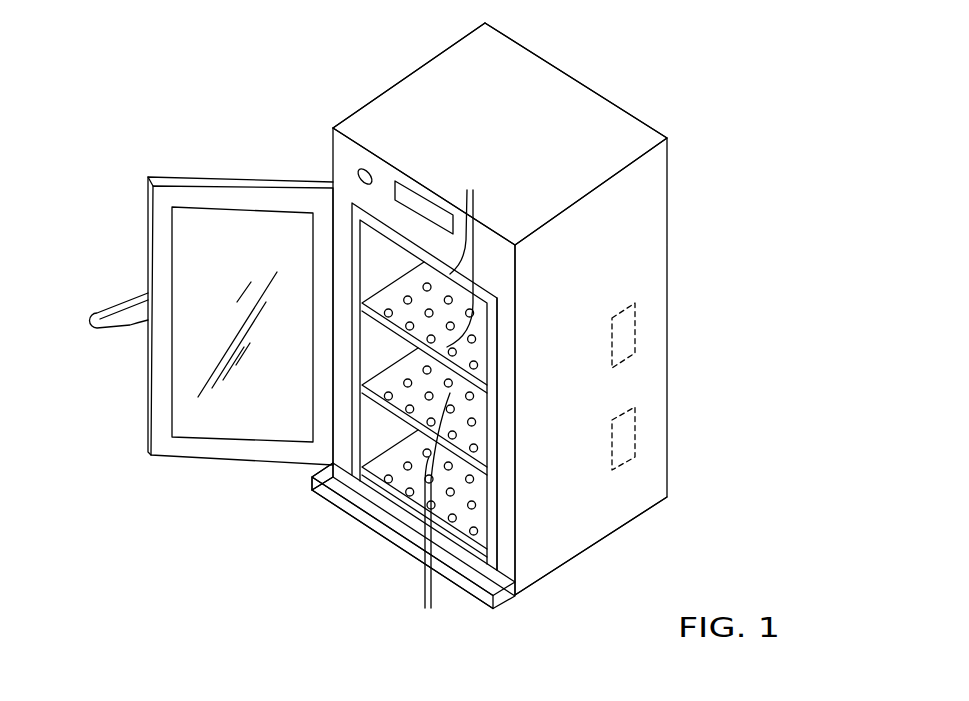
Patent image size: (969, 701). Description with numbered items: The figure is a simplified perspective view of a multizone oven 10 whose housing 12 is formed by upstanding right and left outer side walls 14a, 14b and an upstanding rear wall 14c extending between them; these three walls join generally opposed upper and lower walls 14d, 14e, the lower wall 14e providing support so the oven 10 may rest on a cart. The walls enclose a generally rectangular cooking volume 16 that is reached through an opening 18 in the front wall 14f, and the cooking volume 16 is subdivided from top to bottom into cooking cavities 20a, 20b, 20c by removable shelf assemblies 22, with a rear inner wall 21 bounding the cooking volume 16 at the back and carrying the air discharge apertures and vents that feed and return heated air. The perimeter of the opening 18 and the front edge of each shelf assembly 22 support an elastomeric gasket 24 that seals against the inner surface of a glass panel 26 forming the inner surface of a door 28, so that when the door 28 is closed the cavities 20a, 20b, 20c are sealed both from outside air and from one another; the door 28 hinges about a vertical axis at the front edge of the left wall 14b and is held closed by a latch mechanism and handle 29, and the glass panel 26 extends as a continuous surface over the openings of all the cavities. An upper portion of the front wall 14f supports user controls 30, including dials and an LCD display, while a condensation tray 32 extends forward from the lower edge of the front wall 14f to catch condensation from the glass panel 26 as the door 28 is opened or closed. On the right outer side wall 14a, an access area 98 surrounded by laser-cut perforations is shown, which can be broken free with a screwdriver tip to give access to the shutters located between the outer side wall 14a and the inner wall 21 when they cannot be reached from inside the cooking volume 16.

The multizone oven 10 is at (437, 338).
The housing 12 is at (499, 323).
The right outer side wall 14a is at (630, 366).
The left outer side wall 14b is at (368, 93).
The rear wall 14c is at (613, 90).
The upper wall 14d is at (452, 68).
The lower wall 14e is at (632, 522).
The front wall 14f is at (344, 156).
The cooking volume 16 is at (383, 568).
The opening 18 is at (499, 562).
The cooking cavity 20a is at (485, 355).
The cooking cavity 20b is at (482, 432).
The cooking cavity 20c is at (472, 508).
The rear inner wall 21 is at (313, 485).
The shelf assembly 22 is at (433, 516).
The elastomeric gasket 24 is at (465, 255).
The glass panel 26 is at (220, 420).
The door 28 is at (210, 319).
The handle 29 is at (108, 312).
The user controls 30 is at (420, 195).
The condensation tray 32 is at (468, 597).
The access area 98 is at (636, 326).